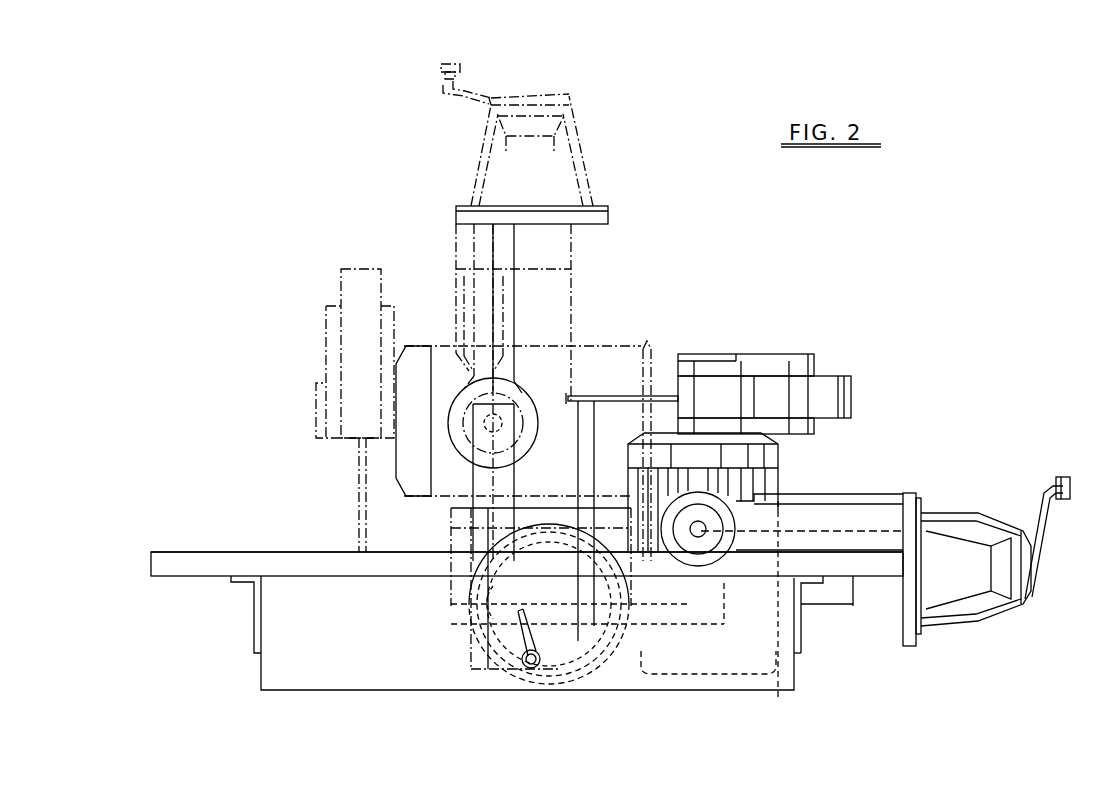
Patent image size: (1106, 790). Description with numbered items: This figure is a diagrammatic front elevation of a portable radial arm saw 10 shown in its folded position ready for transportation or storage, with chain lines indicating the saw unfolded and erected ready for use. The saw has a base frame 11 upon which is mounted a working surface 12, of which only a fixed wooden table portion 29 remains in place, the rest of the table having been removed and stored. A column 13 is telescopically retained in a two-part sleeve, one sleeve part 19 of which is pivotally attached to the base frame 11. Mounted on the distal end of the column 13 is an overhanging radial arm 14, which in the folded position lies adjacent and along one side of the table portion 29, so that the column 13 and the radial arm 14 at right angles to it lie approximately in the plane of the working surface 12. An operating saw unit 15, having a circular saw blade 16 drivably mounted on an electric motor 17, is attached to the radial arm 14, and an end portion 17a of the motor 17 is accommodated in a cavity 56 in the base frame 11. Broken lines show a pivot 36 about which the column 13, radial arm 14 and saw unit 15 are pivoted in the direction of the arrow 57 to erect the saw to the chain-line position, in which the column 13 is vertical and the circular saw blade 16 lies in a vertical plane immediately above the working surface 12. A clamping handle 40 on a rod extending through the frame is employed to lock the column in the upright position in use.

The radial arm saw 10 is at (903, 413).
The base frame 11 is at (318, 690).
The working surface 12 is at (178, 579).
The column 13 is at (553, 297).
The radial arm 14 is at (577, 180).
The operating saw unit 15 is at (320, 321).
The circular saw blade 16 is at (358, 513).
The electric motor 17 is at (417, 362).
The end portion of the motor 17a is at (757, 658).
The sleeve part 19 is at (688, 625).
The table portion 29 is at (288, 565).
The pivot 36 is at (548, 603).
The clamping handle 40 is at (539, 666).
The cavity 56 is at (621, 662).
The arrow 57 is at (812, 254).